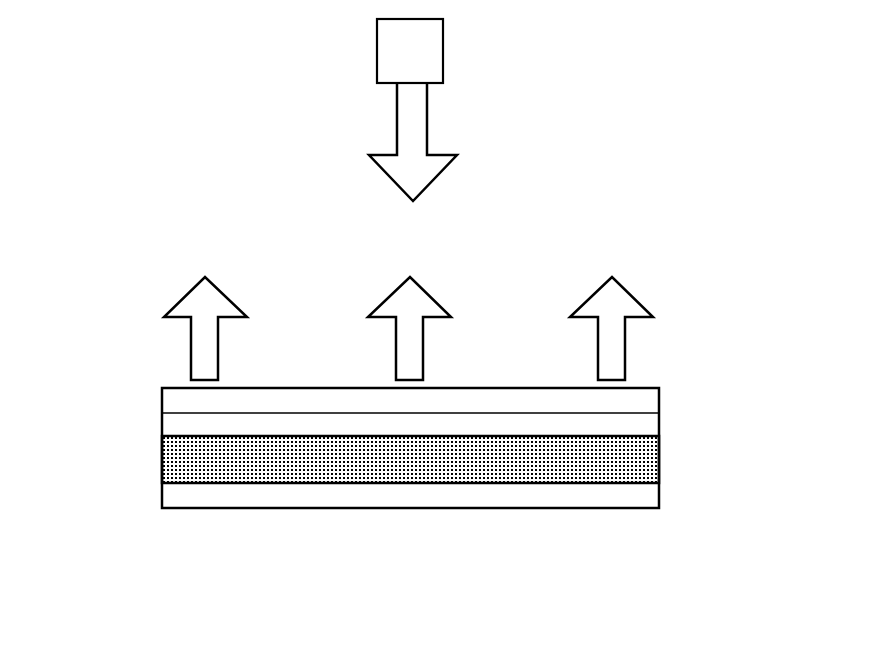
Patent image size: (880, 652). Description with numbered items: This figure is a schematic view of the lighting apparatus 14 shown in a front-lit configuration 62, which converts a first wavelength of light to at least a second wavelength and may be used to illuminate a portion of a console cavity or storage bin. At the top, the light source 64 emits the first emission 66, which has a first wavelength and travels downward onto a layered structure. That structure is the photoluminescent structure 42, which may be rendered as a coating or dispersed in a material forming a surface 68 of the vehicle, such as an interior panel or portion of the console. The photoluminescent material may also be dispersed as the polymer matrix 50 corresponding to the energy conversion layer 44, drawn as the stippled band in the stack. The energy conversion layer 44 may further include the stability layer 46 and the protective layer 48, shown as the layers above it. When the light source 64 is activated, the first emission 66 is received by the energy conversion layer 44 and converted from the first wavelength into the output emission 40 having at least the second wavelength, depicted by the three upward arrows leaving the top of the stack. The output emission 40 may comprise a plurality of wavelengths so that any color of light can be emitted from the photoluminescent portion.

The lighting apparatus 14 is at (616, 86).
The front-lit configuration 62 is at (405, 310).
The light source 64 is at (424, 58).
The first emission 66 is at (405, 118).
The output emission 40 is at (215, 348).
The photoluminescent structure 42 is at (405, 433).
The energy conversion layer 44 is at (647, 463).
The stability layer 46 is at (650, 423).
The protective layer 48 is at (650, 402).
The polymer matrix 50 is at (405, 457).
The surface 68 is at (583, 497).